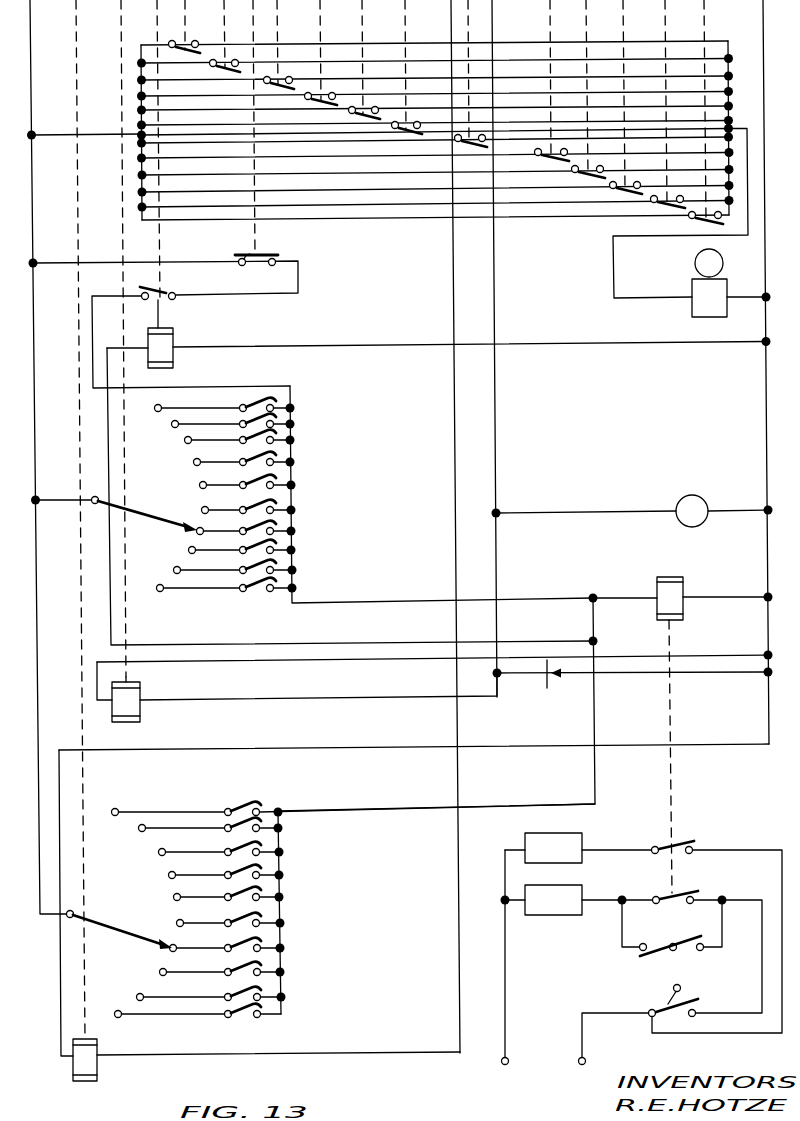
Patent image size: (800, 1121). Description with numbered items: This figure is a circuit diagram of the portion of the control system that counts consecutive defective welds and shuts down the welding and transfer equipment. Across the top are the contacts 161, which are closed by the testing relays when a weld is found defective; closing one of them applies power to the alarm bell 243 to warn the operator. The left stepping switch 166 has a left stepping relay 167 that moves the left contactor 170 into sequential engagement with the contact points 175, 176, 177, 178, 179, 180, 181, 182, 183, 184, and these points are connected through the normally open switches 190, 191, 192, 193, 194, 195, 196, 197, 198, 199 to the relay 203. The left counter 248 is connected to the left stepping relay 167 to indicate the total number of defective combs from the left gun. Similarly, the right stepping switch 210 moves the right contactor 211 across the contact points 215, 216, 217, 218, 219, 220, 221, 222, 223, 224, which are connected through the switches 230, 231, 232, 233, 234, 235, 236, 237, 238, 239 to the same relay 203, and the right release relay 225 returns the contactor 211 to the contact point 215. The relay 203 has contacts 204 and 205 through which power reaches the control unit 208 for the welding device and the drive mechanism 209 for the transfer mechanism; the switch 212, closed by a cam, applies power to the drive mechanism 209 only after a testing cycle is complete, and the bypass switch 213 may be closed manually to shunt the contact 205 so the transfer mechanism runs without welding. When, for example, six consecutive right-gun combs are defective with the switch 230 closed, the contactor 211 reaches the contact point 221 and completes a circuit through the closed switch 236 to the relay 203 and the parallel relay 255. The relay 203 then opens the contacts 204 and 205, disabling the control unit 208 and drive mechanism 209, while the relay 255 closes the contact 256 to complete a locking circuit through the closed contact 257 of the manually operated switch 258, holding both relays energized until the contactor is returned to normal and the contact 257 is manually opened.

The contacts 161 is at (269, 79).
The stepping switch 166 is at (125, 537).
The left stepping relay 167 is at (141, 707).
The left contactor 170 is at (166, 510).
The contact point 175 is at (160, 405).
The contact point 176 is at (177, 421).
The contact point 177 is at (196, 433).
The contact point 178 is at (205, 451).
The contact point 179 is at (205, 481).
The contact point 180 is at (206, 506).
The contact point 181 is at (201, 527).
The contact point 182 is at (193, 547).
The contact point 183 is at (178, 567).
The contact point 184 is at (162, 585).
The normally open switch 190 is at (294, 404).
The normally open switch 191 is at (294, 420).
The normally open switch 192 is at (294, 436).
The normally open switch 193 is at (294, 458).
The normally open switch 194 is at (295, 481).
The normally open switch 195 is at (295, 506).
The normally open switch 196 is at (295, 527).
The normally open switch 197 is at (295, 546).
The normally open switch 198 is at (296, 566).
The normally open switch 199 is at (296, 584).
The relay 203 is at (664, 595).
The contact 204 is at (661, 847).
The contact 205 is at (668, 896).
The control unit 208 is at (556, 830).
The drive mechanism 209 is at (558, 905).
The switch 210 is at (77, 937).
The right contactor 211 is at (100, 931).
The switch 212 is at (696, 996).
The bypass switch 213 is at (656, 959).
The contact point 215 is at (118, 809).
The contact point 216 is at (150, 821).
The contact point 217 is at (170, 841).
The contact point 218 is at (180, 866).
The contact point 219 is at (185, 888).
The contact point 220 is at (186, 912).
The contact point 221 is at (180, 938).
The contact point 222 is at (168, 963).
The contact point 223 is at (142, 994).
The contact point 224 is at (121, 1011).
The right release relay 225 is at (98, 1070).
The switch 230 is at (262, 805).
The switch 231 is at (282, 826).
The switch 232 is at (283, 850).
The switch 233 is at (283, 873).
The switch 234 is at (283, 895).
The switch 235 is at (284, 921).
The switch 236 is at (284, 946).
The switch 237 is at (284, 970).
The switch 238 is at (285, 995).
The switch 239 is at (285, 1012).
The alarm bell 243 is at (703, 305).
The left counter 248 is at (688, 498).
The relay 255 is at (165, 339).
The contact 256 is at (165, 288).
The contact 257 is at (165, 278).
The manually operated switch 258 is at (248, 237).